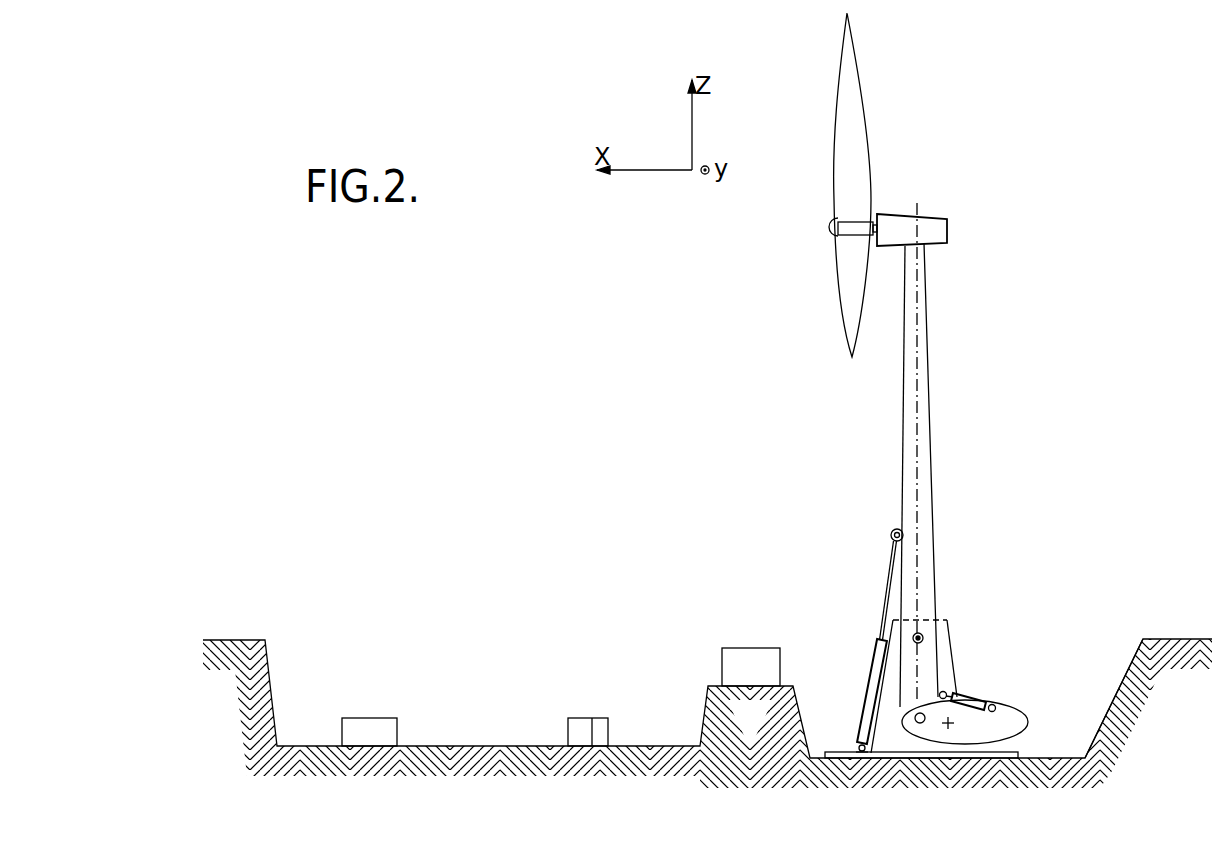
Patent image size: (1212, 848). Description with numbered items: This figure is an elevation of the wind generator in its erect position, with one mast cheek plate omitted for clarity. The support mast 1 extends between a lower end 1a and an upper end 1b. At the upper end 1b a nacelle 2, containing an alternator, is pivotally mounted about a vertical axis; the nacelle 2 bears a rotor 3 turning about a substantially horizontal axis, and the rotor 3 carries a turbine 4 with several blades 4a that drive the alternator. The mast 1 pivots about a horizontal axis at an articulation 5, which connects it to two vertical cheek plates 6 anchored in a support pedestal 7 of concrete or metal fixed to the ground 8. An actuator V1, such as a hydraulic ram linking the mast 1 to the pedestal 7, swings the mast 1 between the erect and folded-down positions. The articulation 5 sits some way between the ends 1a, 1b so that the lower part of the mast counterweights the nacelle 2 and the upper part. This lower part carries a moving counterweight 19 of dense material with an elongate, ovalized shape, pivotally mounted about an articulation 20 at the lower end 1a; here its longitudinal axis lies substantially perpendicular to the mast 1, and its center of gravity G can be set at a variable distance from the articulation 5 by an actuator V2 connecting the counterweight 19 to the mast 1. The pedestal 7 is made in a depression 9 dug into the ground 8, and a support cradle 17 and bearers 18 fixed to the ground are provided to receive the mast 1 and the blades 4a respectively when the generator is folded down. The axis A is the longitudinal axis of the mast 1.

The support mast 1 is at (932, 426).
The lower end 1a is at (918, 742).
The upper end 1b is at (917, 252).
The nacelle 2 is at (926, 235).
The rotor 3 is at (852, 228).
The turbine 4 is at (882, 114).
The blades 4a is at (846, 280).
The articulation 5 is at (920, 638).
The vertical cheek plates 6 is at (892, 733).
The support pedestal 7 is at (1000, 758).
The ground 8 is at (1165, 652).
The depression 9 is at (1092, 675).
The support cradle 17 is at (750, 664).
The bearers 18 is at (590, 728).
The moving counterweight 19 is at (1010, 718).
The articulation 20 is at (915, 718).
The actuator V1 is at (868, 660).
The actuator V2 is at (969, 694).
The tower axis A is at (918, 477).
The center of gravity G is at (958, 723).